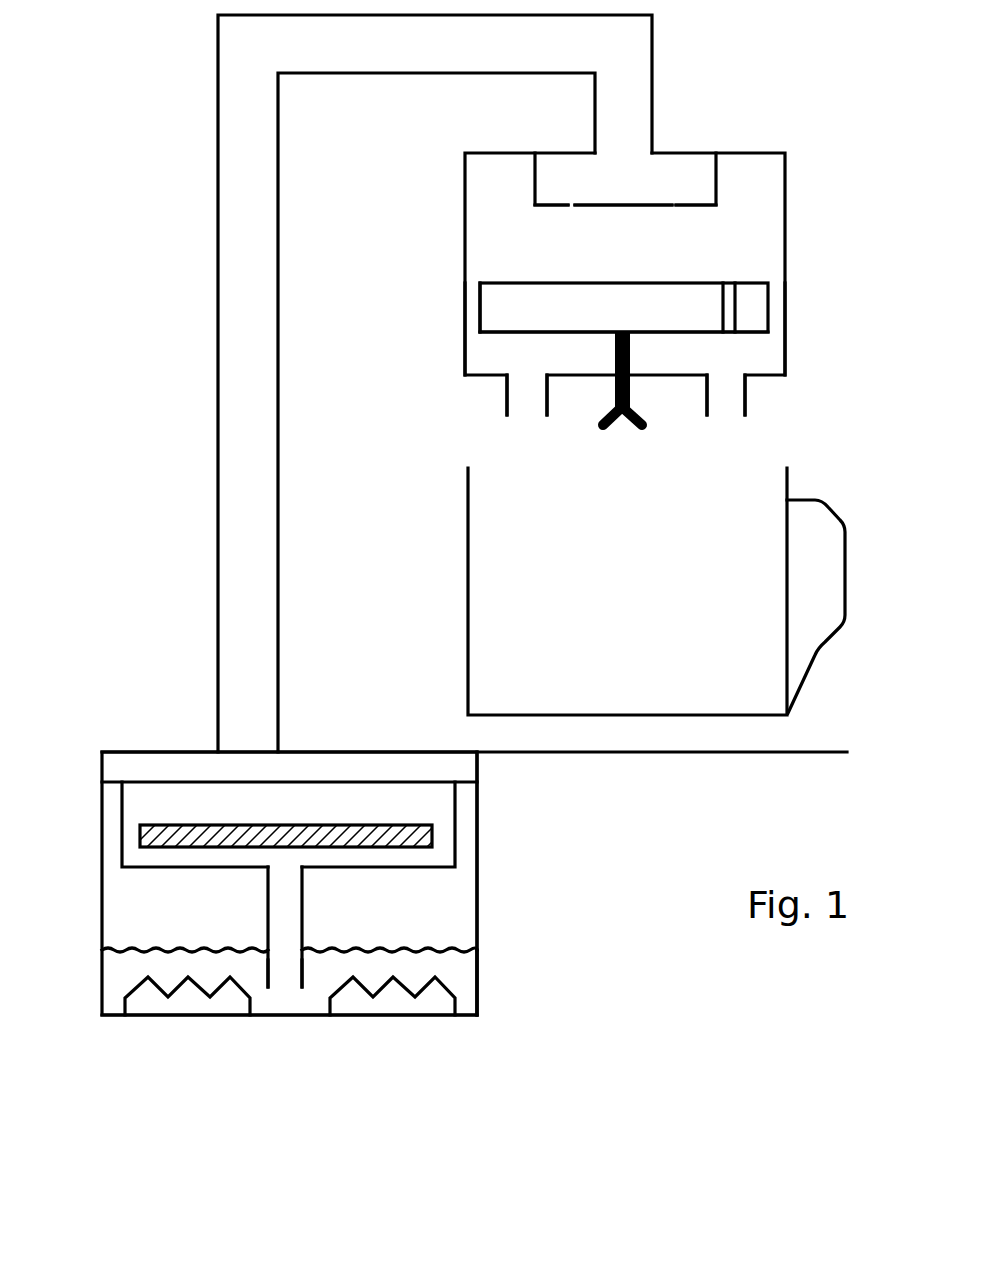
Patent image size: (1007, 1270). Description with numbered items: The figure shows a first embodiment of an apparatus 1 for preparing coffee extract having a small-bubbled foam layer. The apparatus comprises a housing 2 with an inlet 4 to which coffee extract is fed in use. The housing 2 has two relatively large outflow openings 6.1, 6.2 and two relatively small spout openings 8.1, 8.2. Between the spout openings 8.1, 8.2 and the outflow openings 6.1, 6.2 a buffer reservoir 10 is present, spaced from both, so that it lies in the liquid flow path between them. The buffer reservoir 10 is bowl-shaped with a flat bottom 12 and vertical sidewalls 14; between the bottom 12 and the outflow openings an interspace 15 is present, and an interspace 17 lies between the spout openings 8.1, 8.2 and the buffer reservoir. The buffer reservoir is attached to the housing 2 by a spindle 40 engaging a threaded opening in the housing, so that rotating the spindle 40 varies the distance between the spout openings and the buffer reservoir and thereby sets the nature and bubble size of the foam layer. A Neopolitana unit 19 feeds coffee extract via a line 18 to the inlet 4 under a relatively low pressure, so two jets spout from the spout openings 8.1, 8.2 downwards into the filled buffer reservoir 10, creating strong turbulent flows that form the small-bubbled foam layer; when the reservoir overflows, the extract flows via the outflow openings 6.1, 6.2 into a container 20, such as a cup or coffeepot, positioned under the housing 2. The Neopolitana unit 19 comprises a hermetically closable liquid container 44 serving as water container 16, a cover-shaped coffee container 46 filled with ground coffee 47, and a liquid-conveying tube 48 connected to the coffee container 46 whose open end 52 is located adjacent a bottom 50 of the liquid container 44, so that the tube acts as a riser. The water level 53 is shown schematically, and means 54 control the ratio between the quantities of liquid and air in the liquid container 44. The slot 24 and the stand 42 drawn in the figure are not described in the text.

The apparatus 1 is at (377, 222).
The housing 2 is at (785, 255).
The inlet 4 is at (665, 165).
The outflow opening 6.1 is at (520, 397).
The outflow opening 6.2 is at (730, 393).
The spout opening 8.1 is at (568, 208).
The spout opening 8.2 is at (675, 208).
The buffer reservoir 10 is at (493, 323).
The bottom 12 is at (547, 332).
The sidewalls 14 is at (482, 313).
The interspace 15 is at (540, 369).
The water container 16 is at (477, 885).
The interspace 17 is at (632, 264).
The line 18 is at (278, 552).
The Neopolitana unit 19 is at (488, 981).
The container 20 is at (788, 490).
The slot 24 is at (725, 293).
The spindle 40 is at (632, 360).
The stand 42 is at (613, 378).
The liquid container 44 is at (100, 897).
The coffee container 46 is at (203, 800).
The ground coffee 47 is at (298, 835).
The liquid-conveying tube 48 is at (303, 932).
The bottom 50 is at (158, 1015).
The open end 52 is at (287, 990).
The water level 53 is at (133, 950).
The means for controlling the ratio between liquid and air 54 is at (188, 997).